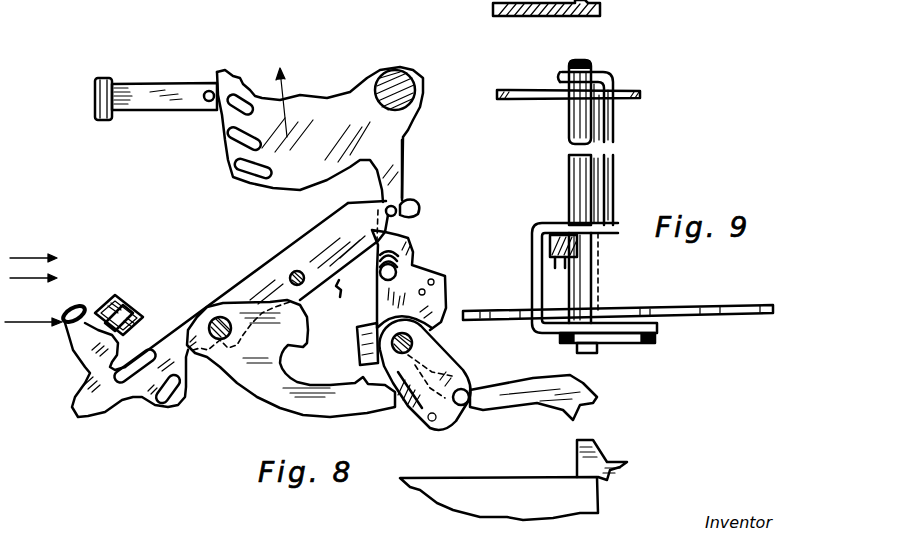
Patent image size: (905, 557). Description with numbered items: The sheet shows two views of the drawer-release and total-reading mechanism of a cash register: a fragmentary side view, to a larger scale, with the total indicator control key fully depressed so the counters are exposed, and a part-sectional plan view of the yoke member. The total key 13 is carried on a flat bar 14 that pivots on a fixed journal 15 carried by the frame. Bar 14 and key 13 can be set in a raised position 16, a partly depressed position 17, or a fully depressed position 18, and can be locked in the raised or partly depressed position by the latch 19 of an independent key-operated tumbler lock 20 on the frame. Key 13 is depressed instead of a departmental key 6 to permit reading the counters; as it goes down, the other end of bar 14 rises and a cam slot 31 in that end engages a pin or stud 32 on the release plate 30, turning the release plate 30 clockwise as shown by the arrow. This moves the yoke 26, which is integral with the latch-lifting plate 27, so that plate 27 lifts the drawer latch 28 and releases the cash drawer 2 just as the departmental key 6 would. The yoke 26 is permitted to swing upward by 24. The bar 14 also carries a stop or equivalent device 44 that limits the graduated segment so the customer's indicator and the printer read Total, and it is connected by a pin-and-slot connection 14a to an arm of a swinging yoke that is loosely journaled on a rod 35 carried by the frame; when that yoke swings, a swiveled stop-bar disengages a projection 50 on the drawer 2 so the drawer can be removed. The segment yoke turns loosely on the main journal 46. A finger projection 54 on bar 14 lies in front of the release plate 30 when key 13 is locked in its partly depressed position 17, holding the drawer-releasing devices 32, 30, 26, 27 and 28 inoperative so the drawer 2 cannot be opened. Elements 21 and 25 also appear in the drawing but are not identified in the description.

In FIG. 8, the cash drawer 2 is at (487, 480).
In FIG. 8, the departmental key 6 is at (95, 86).
In FIG. 8, the total key 13 is at (78, 306).
In FIG. 8, the bar 14 is at (247, 287).
In FIG. 8, the pin-and-slot connection 14a is at (172, 402).
In FIG. 8, the fixed journal 15 is at (296, 270).
In FIG. 8, the raised position 16 is at (33, 248).
In FIG. 8, the partly depressed position 17 is at (33, 268).
In FIG. 8, the fully depressed position 18 is at (33, 312).
In FIG. 8, the latch 19 is at (133, 318).
In FIG. 8, the key-operated tumbler lock 20 is at (118, 300).
In FIG. 8, the slot 21 is at (128, 376).
In FIG. 9, the yoke-releasing element 24 is at (630, 90).
In FIG. 9, the cross rod 25 is at (520, 89).
In FIG. 8, the yoke 26 is at (418, 273).
In FIG. 9, the yoke 26 is at (615, 126).
In FIG. 8, the latch-lifting plate 27 is at (462, 380).
In FIG. 9, the latch-lifting plate 27 is at (620, 344).
In FIG. 8, the drawer latch 28 is at (545, 393).
In FIG. 9, the drawer latch 28 is at (667, 311).
In FIG. 8, the release plate 30 is at (395, 157).
In FIG. 9, the release plate 30 is at (546, 240).
In FIG. 8, the cam slot 31 is at (419, 205).
In FIG. 8, the pin or stud 32 is at (396, 207).
In FIG. 9, the pin or stud 32 is at (562, 260).
In FIG. 8, the rod 35 is at (215, 318).
In FIG. 8, the stop 44 is at (341, 301).
In FIG. 8, the main journal 46 is at (405, 80).
In FIG. 8, the projection 50 is at (600, 456).
In FIG. 8, the finger projection 54 is at (383, 207).